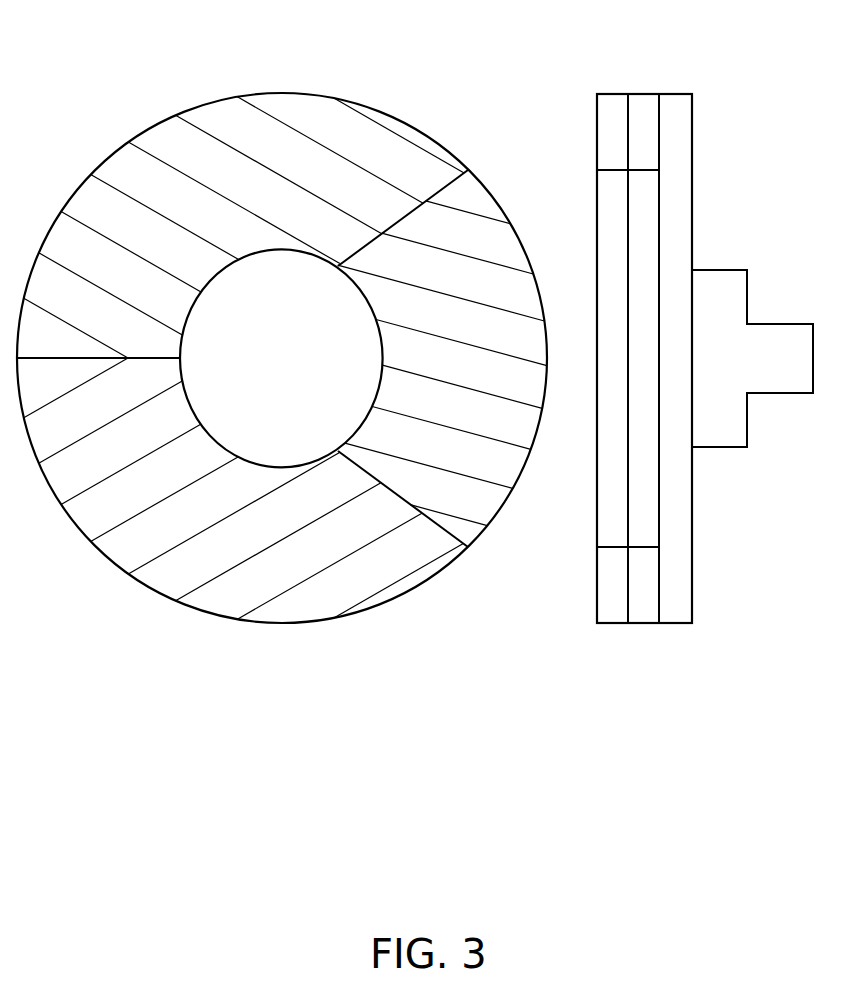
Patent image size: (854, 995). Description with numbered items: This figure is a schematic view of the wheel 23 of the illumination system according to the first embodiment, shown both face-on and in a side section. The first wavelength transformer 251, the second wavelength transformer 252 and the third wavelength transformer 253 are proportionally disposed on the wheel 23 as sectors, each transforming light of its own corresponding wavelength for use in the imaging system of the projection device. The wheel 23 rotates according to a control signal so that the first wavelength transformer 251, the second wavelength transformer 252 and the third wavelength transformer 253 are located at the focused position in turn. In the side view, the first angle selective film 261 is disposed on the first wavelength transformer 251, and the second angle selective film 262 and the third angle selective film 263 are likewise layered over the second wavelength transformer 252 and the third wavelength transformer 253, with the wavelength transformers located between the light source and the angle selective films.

The wheel 23 is at (680, 165).
The first wavelength transformer 251 is at (190, 510).
The second wavelength transformer 252 is at (610, 227).
The third wavelength transformer 253 is at (173, 180).
The first angle selective film 261 is at (647, 621).
The second angle selective film 262 is at (642, 245).
The third angle selective film 263 is at (637, 107).